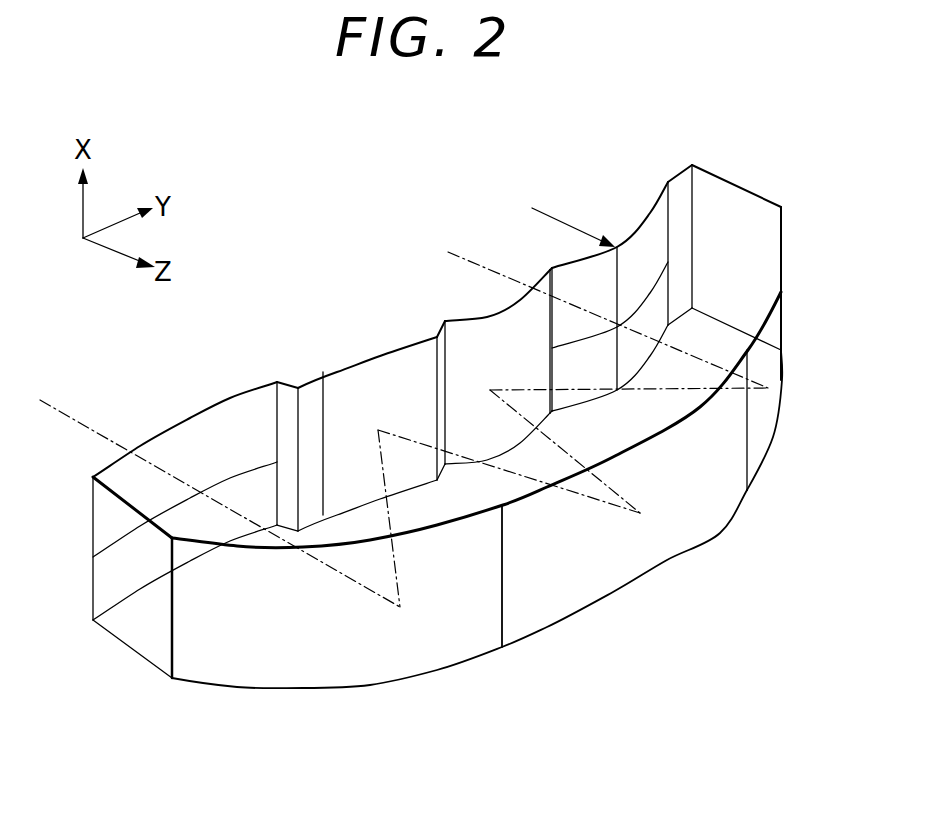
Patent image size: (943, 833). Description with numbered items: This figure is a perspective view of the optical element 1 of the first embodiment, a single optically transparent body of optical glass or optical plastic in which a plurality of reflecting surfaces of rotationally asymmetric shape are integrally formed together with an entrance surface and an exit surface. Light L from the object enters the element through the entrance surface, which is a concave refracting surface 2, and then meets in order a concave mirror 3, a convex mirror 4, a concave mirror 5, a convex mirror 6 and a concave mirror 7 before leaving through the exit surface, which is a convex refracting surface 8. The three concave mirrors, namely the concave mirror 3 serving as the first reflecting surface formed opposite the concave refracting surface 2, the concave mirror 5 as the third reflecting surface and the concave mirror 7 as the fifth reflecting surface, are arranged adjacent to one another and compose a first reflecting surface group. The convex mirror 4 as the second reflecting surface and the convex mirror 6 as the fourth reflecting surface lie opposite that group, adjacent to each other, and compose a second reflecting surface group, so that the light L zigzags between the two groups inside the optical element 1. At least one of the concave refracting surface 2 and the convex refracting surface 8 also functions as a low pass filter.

The optical element 1 is at (750, 190).
The concave refracting surface 2 is at (643, 223).
The concave mirror 3 is at (782, 378).
The convex mirror 4 is at (490, 316).
The concave mirror 5 is at (685, 522).
The convex mirror 6 is at (323, 365).
The concave mirror 7 is at (310, 668).
The convex refracting surface 8 is at (223, 400).
The light L is at (552, 215).